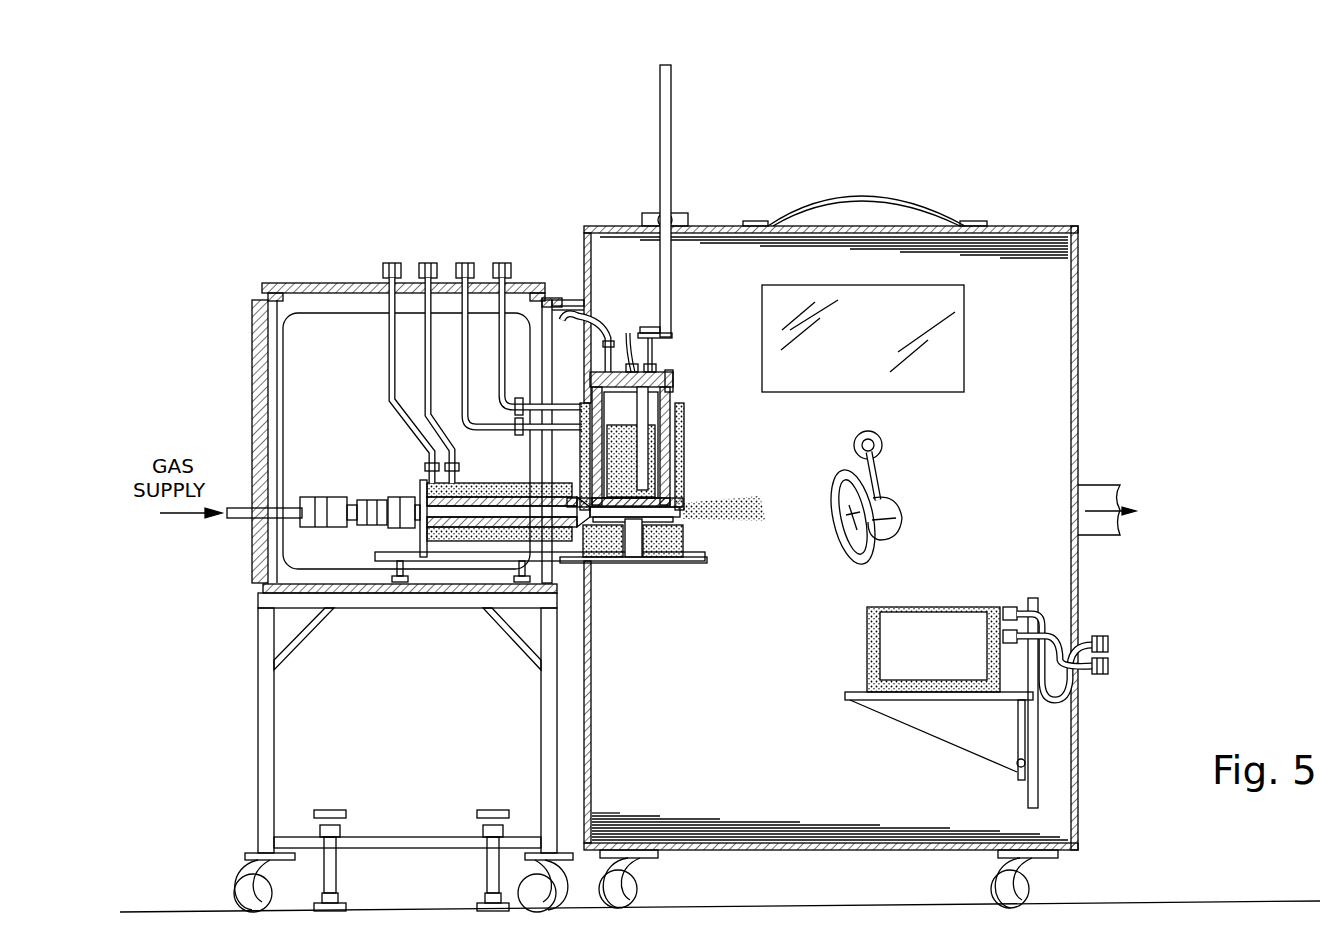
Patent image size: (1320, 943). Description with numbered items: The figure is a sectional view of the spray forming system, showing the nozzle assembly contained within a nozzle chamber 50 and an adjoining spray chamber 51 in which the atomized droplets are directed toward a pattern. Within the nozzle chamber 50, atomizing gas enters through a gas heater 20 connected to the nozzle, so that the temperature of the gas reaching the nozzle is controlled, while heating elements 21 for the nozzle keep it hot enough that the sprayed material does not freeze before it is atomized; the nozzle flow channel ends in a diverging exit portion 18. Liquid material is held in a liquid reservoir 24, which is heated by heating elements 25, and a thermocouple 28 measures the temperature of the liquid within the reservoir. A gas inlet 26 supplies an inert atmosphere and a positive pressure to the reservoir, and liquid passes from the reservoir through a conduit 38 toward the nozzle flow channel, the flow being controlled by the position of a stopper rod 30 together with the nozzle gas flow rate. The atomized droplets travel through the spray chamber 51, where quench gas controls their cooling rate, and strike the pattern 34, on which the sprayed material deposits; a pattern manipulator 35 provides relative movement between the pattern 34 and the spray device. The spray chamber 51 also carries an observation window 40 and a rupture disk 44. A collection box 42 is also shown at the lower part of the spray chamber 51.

The exit portion 18 is at (676, 518).
The gas heater 20 is at (425, 482).
The heating elements 21 is at (690, 546).
The liquid reservoir 24 is at (675, 399).
The heating elements 25 is at (694, 470).
The gas inlet 26 is at (588, 270).
The thermocouple 28 is at (675, 452).
The stopper rod 30 is at (660, 358).
The pattern 34 is at (838, 504).
The pattern manipulator 35 is at (897, 519).
The conduit 38 is at (680, 511).
The observation window 40 is at (862, 392).
The collection box 42 is at (864, 652).
The rupture disk 44 is at (876, 198).
The nozzle chamber 50 is at (305, 335).
The spray chamber 51 is at (1042, 312).